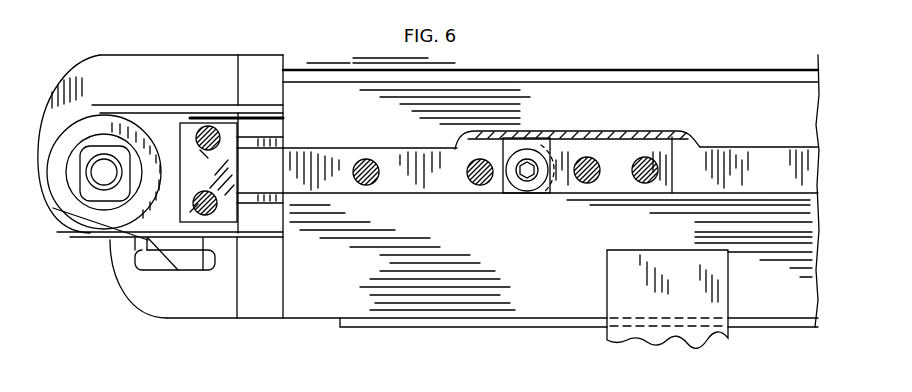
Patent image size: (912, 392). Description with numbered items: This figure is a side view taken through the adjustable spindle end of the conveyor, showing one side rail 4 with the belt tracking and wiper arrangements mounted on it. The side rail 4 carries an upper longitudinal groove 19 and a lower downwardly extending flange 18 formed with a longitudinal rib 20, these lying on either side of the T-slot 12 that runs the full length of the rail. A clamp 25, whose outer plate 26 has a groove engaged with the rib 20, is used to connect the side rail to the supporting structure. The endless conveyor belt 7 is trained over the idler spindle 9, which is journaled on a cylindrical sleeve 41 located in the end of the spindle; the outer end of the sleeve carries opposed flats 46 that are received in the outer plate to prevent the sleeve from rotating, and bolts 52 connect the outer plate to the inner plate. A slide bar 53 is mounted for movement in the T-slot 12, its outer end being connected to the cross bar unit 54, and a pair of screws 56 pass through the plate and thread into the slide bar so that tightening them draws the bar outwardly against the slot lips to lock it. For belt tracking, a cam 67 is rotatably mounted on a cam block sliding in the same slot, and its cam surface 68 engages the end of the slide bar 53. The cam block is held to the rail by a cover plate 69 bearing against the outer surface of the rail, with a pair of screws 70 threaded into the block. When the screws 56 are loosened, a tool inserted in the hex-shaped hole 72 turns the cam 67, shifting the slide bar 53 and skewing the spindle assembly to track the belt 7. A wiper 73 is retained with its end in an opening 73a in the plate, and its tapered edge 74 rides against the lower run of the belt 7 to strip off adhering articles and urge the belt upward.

The side rail 4 is at (783, 51).
The endless conveyor belt 7 is at (125, 108).
The idler spindle 9 is at (57, 210).
The T-slot 12 is at (820, 157).
The downwardly extending flange 18 is at (487, 300).
The longitudinal groove 19 is at (716, 72).
The longitudinal rib 20 is at (400, 330).
The clamp 25 is at (608, 305).
The outer plate 26 is at (720, 298).
The cylindrical sleeve 41 is at (93, 204).
The flats 46 is at (97, 147).
The bolts 52 is at (210, 134).
The slide bar 53 is at (390, 165).
The cross bar unit 54 is at (282, 142).
The screws 56 is at (368, 183).
The cam 67 is at (533, 183).
The cam surface 68 is at (542, 145).
The cover plate 69 is at (632, 148).
The screws 70 is at (642, 183).
The hex-shaped hole 72 is at (525, 180).
The wiper 73 is at (183, 253).
The opening 73a is at (143, 265).
The tapered edge 74 is at (112, 202).